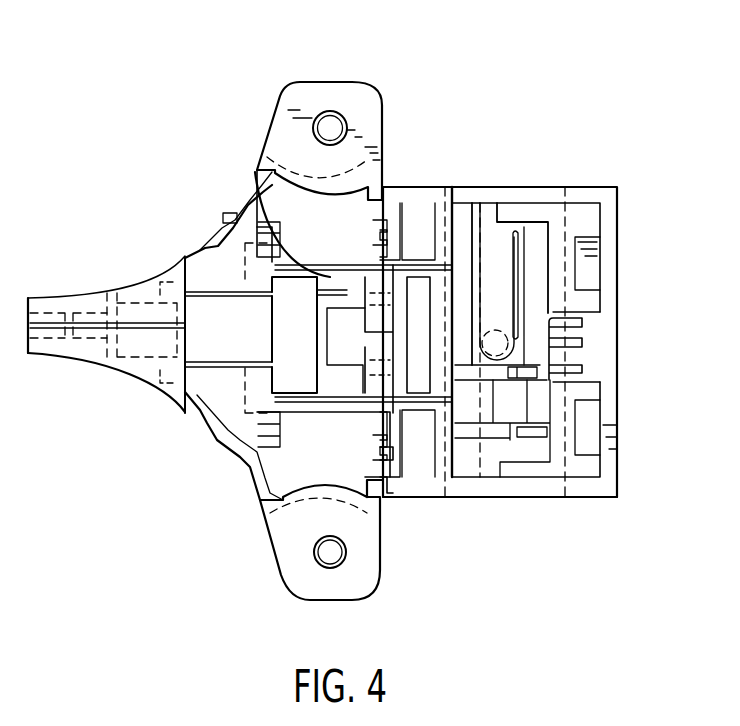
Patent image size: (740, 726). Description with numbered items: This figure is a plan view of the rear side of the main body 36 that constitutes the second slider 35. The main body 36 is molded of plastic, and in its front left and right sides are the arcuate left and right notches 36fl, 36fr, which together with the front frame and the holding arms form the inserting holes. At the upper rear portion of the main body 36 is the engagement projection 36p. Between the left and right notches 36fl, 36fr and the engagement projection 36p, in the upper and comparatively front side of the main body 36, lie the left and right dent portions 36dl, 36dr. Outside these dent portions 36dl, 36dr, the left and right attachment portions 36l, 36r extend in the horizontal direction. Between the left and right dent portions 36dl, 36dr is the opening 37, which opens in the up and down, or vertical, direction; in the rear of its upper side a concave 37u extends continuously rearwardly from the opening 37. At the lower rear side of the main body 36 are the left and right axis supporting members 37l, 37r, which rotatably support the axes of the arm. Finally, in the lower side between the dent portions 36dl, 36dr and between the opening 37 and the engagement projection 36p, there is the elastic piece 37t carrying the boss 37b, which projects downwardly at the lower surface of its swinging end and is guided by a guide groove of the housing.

The second slider 35 is at (493, 498).
The main body 36 is at (583, 186).
The left attachment portion 36l is at (367, 100).
The right attachment portion 36r is at (360, 580).
The engagement projection 36p is at (560, 337).
The left dent portion 36dl is at (272, 262).
The right dent portion 36dr is at (262, 427).
The left notch 36fl is at (66, 296).
The right notch 36fr is at (78, 362).
The opening 37 is at (213, 343).
The left axis supporting member 37l is at (273, 215).
The right axis supporting member 37r is at (332, 390).
The elastic piece 37t is at (462, 220).
The concave 37u is at (357, 353).
The boss 37b is at (510, 332).